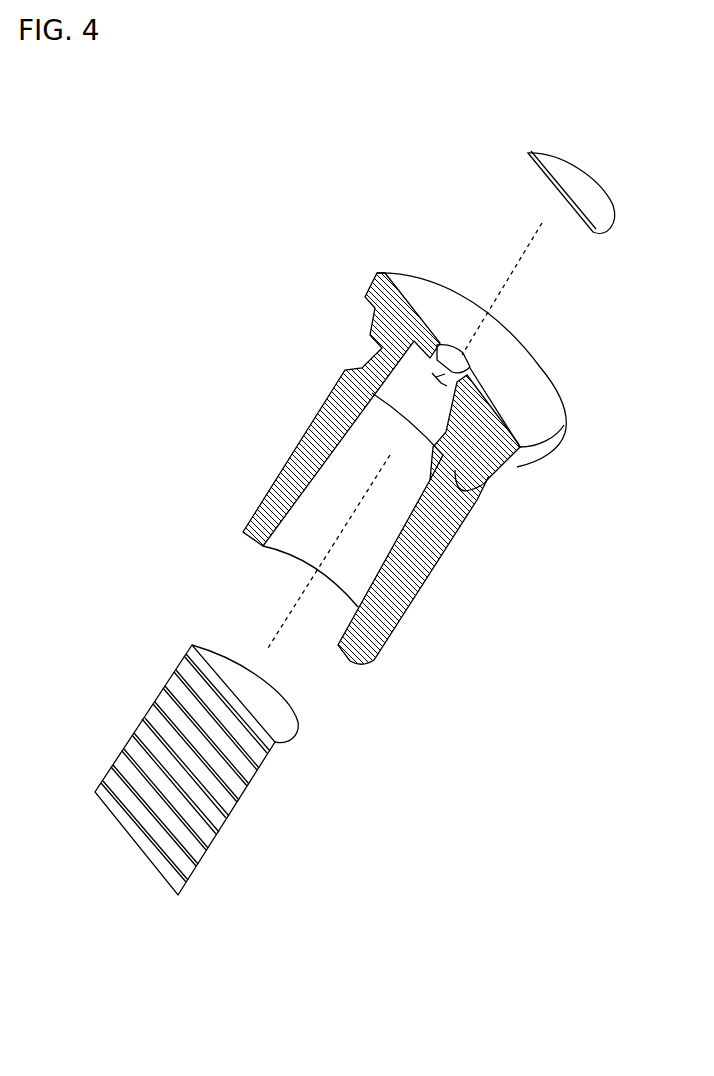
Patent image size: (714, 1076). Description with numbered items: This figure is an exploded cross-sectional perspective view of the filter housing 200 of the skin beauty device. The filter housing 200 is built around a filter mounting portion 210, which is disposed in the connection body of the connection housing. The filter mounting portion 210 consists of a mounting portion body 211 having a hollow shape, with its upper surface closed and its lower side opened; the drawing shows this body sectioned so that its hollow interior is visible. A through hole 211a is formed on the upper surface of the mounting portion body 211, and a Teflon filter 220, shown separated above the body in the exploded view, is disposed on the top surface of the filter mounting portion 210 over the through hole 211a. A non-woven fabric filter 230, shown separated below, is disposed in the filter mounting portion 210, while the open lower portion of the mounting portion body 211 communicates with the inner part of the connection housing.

The filter housing 200 is at (113, 235).
The filter mounting portion 210 is at (293, 458).
The mounting portion body 211 is at (553, 475).
The through hole 211a is at (465, 358).
The Teflon filter 220 is at (527, 152).
The non-woven fabric filter 230 is at (135, 718).